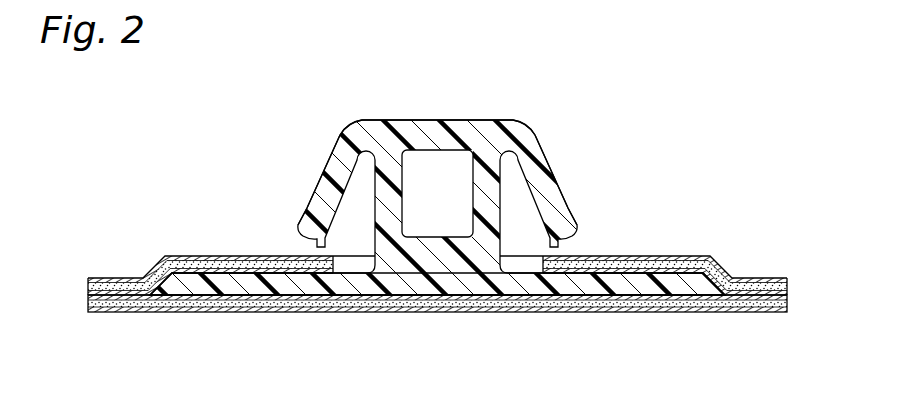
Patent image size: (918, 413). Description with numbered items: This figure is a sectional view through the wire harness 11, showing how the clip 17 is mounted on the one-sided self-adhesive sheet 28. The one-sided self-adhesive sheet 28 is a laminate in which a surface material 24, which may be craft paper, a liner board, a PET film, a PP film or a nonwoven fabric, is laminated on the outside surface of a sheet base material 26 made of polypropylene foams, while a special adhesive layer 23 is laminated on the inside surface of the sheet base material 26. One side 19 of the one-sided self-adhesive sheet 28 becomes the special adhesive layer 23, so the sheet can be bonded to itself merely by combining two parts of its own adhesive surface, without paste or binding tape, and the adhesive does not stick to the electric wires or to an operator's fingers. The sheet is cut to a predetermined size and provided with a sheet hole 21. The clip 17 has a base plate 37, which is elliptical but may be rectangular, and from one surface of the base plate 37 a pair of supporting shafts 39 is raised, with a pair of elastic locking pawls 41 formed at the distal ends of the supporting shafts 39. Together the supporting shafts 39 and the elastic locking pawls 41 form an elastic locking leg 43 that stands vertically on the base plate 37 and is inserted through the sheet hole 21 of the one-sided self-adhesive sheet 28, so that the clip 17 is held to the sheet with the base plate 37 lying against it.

The wire harness 11 is at (685, 141).
The clip 17 is at (477, 83).
The elastic locking leg 43 is at (490, 118).
The supporting shafts 39 is at (473, 178).
The elastic locking pawls 41 is at (303, 210).
The sheet hole 21 is at (333, 264).
The base plate 37 is at (592, 283).
The one-sided self-adhesive sheet 28 is at (232, 364).
The sheet base material 26 is at (172, 262).
The surface material 24 is at (633, 255).
The special adhesive layer 23 is at (247, 273).
The one side 19 is at (749, 286).